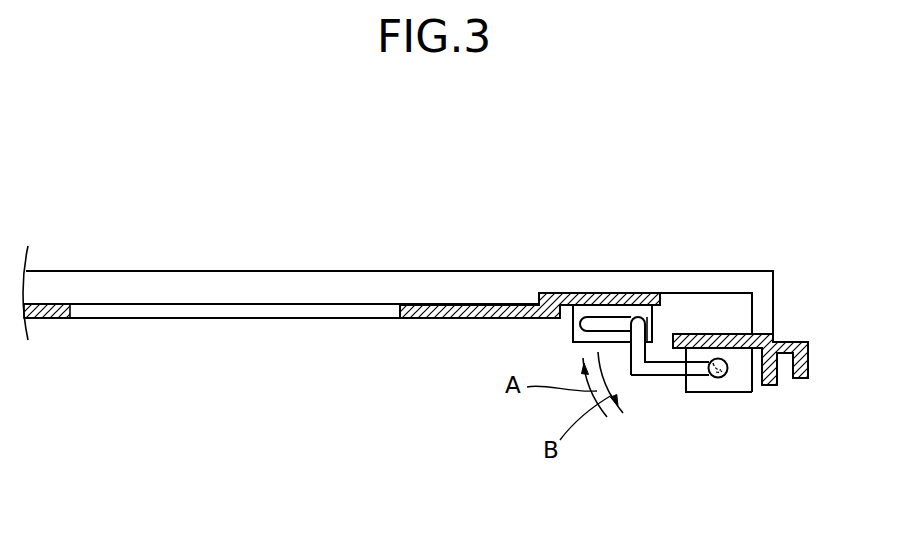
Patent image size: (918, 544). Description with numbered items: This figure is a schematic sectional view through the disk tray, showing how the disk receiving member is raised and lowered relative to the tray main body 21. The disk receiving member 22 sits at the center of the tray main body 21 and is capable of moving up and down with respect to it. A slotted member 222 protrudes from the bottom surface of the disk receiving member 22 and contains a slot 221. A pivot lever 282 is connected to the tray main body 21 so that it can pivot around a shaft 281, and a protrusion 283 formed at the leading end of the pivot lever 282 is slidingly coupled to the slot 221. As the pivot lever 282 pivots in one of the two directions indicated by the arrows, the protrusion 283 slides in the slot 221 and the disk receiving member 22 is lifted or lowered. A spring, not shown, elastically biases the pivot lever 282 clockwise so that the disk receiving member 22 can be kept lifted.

The tray main body 21 is at (797, 342).
The disk receiving member 22 is at (422, 320).
The slot 221 is at (588, 322).
The slotted member 222 is at (573, 327).
The shaft 281 is at (715, 378).
The pivot lever 282 is at (658, 368).
The protrusion 283 is at (640, 317).